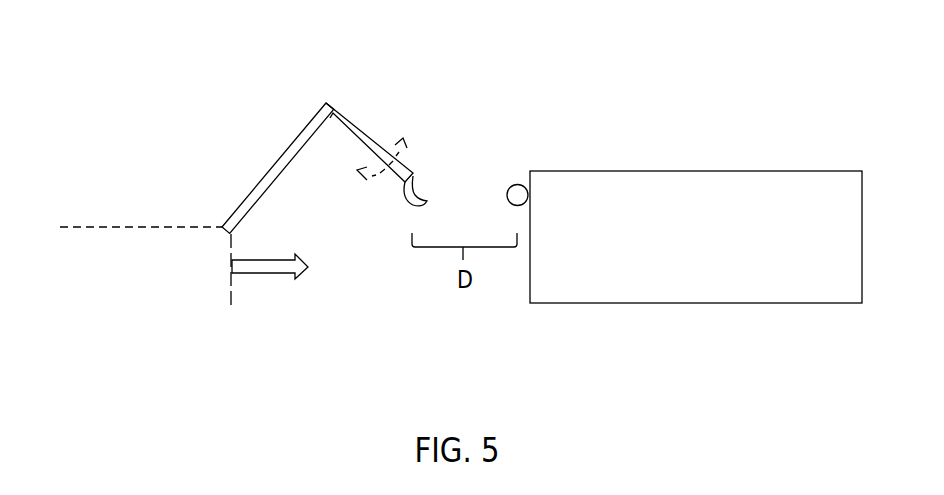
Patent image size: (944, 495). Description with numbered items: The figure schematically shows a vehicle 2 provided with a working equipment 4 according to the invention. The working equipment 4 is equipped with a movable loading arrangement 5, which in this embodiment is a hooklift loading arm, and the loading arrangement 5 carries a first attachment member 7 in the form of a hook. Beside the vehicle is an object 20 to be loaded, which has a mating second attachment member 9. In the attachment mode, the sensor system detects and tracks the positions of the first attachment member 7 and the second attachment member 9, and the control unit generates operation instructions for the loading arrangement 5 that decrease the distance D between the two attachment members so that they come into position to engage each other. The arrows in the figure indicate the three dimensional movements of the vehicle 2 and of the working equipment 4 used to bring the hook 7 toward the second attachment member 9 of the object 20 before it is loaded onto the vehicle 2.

The vehicle 2 is at (148, 248).
The working equipment 4 is at (318, 140).
The movable loading arrangement 5 is at (288, 150).
The first attachment member 7 is at (417, 194).
The second attachment member 9 is at (519, 192).
The object 20 is at (696, 237).